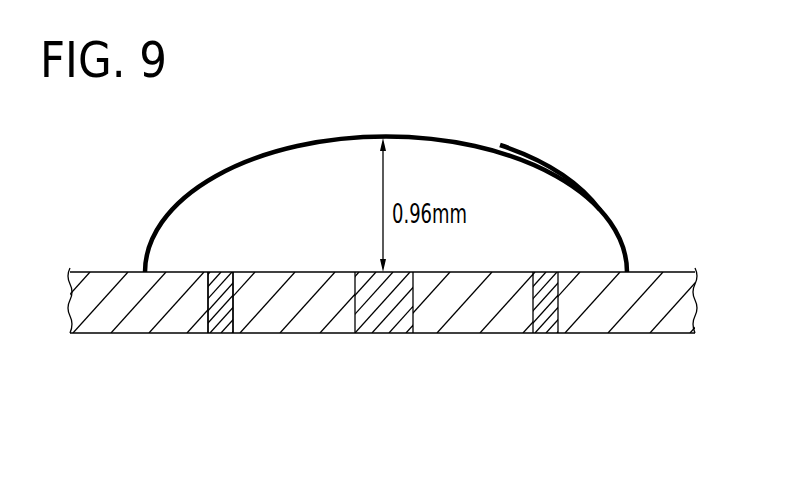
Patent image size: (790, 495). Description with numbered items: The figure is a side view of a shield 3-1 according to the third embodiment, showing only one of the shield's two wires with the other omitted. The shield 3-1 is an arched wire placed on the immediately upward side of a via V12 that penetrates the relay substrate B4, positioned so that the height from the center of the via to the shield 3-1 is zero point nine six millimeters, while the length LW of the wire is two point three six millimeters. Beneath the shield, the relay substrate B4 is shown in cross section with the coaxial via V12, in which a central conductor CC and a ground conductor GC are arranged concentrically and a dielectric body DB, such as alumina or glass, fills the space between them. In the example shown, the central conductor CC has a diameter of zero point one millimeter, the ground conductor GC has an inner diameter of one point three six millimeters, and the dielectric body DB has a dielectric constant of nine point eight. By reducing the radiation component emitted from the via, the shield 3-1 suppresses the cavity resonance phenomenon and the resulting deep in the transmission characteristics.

The shield 3-1 is at (417, 135).
The length of the wire LW is at (540, 165).
The via V12 is at (215, 333).
The ground conductor GC is at (226, 325).
The dielectric body DB is at (302, 322).
The central conductor CC is at (383, 312).
The relay substrate B4 is at (637, 320).